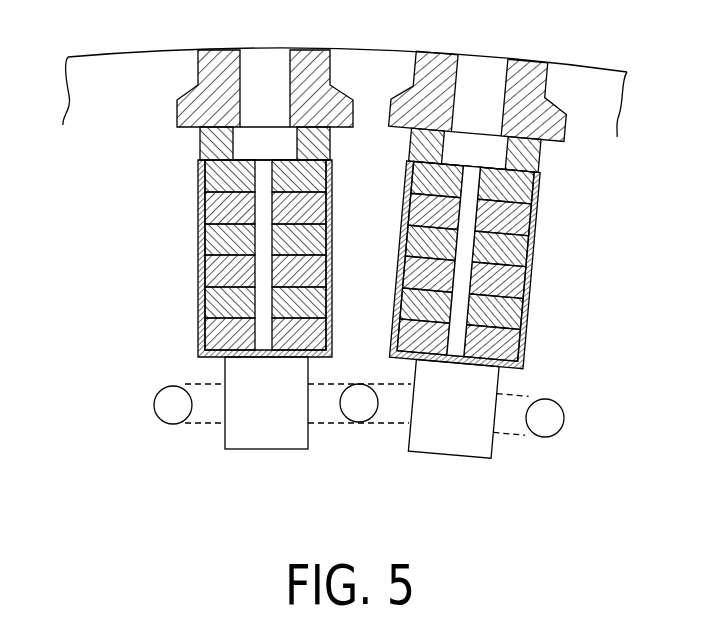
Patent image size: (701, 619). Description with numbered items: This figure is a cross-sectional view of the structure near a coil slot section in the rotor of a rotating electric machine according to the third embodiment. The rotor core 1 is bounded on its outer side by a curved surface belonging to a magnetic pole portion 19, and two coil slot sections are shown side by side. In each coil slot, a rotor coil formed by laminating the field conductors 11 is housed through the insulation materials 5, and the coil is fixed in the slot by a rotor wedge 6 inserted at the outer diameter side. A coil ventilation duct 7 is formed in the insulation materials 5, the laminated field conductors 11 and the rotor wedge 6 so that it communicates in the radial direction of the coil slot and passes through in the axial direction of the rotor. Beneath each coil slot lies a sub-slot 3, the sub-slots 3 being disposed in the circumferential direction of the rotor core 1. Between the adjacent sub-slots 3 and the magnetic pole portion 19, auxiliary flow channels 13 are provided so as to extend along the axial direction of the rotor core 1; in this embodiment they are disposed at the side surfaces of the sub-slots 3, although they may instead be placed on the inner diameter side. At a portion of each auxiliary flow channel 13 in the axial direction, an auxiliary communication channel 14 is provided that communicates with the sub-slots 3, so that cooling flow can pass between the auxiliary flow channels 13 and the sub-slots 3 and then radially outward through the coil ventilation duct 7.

The magnetic pole portion 19 is at (115, 66).
The rotor core 1 is at (244, 260).
The rotor wedge 6 is at (305, 58).
The insulation materials 5 is at (473, 255).
The coil ventilation duct 7 is at (462, 286).
The field conductors 11 is at (220, 337).
The sub-slots 3 is at (275, 438).
The auxiliary flow channels 13 is at (357, 417).
The auxiliary communication channel 14 is at (390, 425).